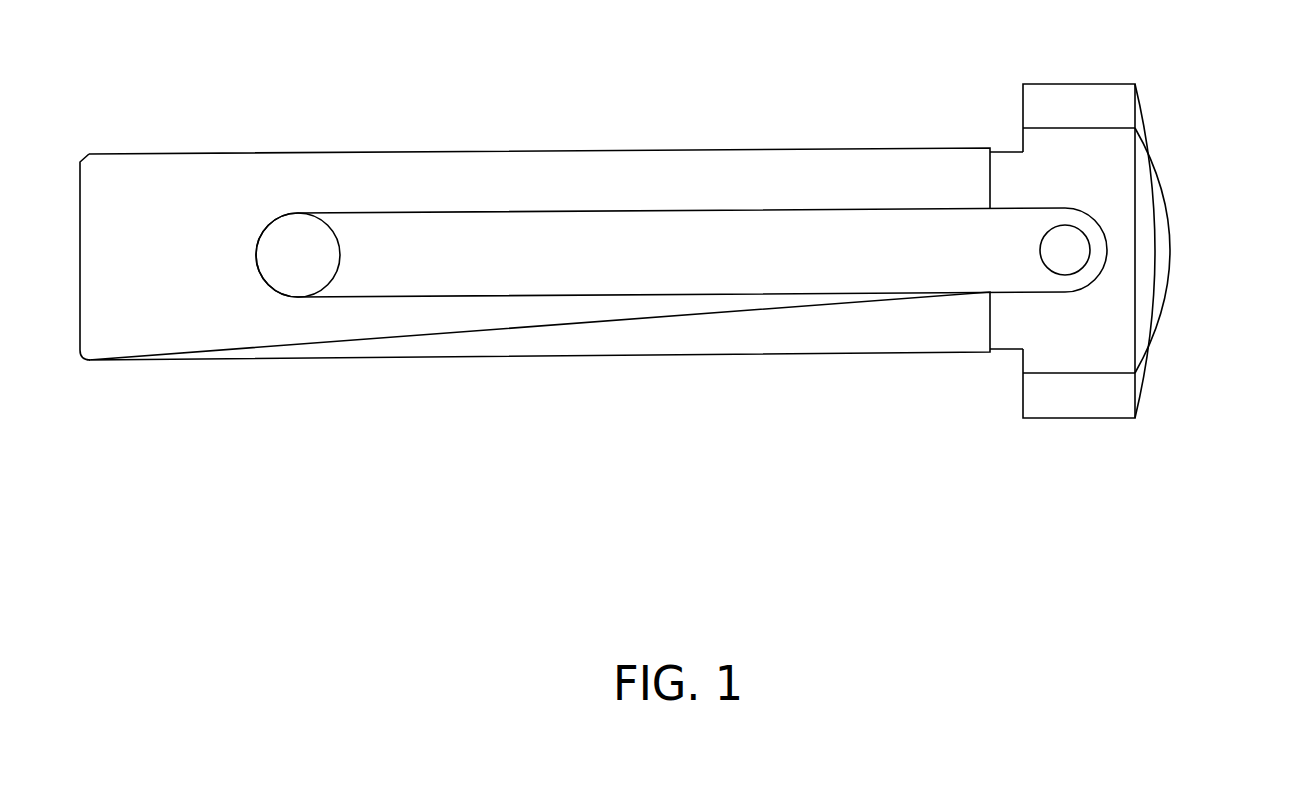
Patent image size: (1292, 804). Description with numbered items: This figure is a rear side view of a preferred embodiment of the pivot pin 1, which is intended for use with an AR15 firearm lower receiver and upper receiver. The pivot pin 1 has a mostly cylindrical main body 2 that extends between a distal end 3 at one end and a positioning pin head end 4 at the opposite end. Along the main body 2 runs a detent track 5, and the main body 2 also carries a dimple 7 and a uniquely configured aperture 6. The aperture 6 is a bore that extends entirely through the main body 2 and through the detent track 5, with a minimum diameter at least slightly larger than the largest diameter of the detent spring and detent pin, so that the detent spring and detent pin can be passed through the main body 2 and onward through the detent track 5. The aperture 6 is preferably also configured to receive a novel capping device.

The pivot pin 1 is at (566, 130).
The main body 2 is at (467, 332).
The distal end 3 is at (82, 273).
The positioning pin head end 4 is at (1170, 227).
The detent track 5 is at (658, 263).
The aperture 6 is at (287, 263).
The dimple 7 is at (1060, 255).